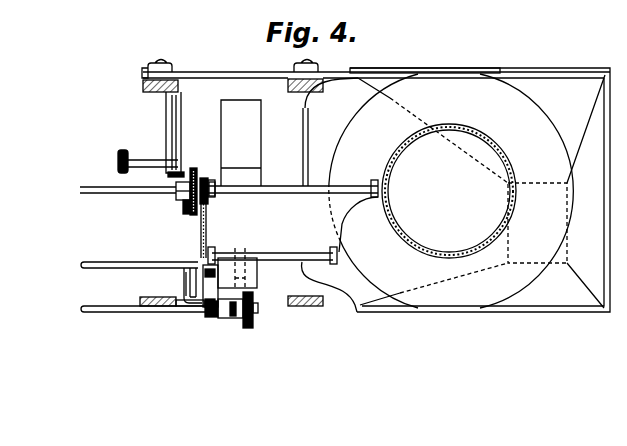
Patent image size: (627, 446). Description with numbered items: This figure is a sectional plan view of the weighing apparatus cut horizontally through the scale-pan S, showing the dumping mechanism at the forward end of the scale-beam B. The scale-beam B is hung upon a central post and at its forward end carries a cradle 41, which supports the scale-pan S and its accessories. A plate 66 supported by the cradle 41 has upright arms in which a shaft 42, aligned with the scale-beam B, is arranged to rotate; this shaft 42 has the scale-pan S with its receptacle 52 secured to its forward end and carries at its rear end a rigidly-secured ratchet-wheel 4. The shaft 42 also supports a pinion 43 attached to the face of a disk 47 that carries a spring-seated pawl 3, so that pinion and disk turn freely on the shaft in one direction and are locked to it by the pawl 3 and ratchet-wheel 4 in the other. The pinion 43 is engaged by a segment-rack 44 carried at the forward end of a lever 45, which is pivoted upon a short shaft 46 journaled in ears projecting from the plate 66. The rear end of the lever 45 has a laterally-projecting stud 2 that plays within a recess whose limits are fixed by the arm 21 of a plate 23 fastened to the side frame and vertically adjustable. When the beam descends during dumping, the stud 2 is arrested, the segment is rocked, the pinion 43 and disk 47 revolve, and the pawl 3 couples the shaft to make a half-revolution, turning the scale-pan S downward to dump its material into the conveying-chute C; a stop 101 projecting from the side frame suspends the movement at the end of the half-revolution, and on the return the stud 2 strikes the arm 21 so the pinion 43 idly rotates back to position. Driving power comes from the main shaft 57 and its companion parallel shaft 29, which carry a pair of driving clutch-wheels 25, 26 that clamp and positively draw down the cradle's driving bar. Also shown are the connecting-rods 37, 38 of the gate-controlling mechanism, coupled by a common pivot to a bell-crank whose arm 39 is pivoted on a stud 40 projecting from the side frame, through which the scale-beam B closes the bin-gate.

The conveying-chute C is at (376, 186).
The receptacle of the scale-pan 52 is at (451, 191).
The scale-pan S is at (405, 152).
The stop 101 is at (505, 77).
The plate 66 is at (345, 228).
The stud 40 is at (182, 114).
The cradle 41 is at (262, 139).
The scale-beam B is at (103, 196).
The connecting-rod 37 is at (121, 155).
The connecting-rod 38 is at (123, 173).
The bell-crank arm 39 is at (147, 164).
The ratchet-wheel 4 is at (181, 204).
The disk 47 is at (193, 170).
The spring-seated pawl 3 is at (186, 215).
The pinion 43 is at (204, 180).
The segment-rack 44 is at (208, 219).
The shaft 42 is at (274, 194).
The companion parallel shaft 29 is at (104, 262).
The arm of plate 21 is at (195, 268).
The laterally-projecting stud 2 is at (185, 286).
The plate 23 is at (190, 307).
The main shaft 57 is at (100, 307).
The lever 45 is at (212, 286).
The driving clutch-wheel 26 is at (246, 256).
The short shaft 46 is at (308, 253).
The driving clutch-wheel 25 is at (258, 320).